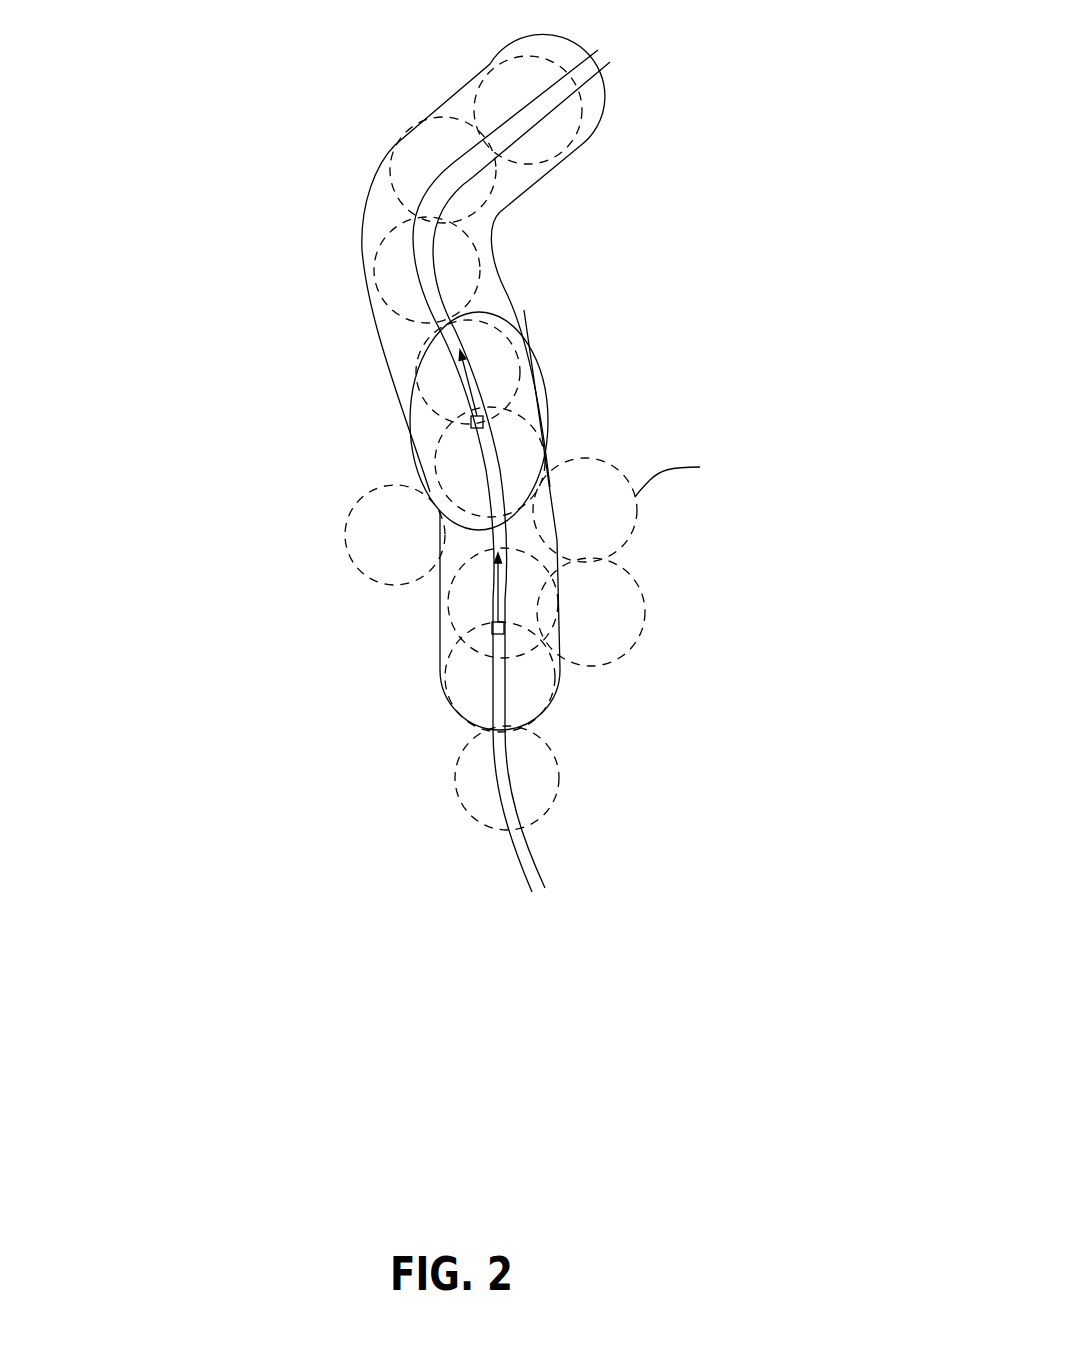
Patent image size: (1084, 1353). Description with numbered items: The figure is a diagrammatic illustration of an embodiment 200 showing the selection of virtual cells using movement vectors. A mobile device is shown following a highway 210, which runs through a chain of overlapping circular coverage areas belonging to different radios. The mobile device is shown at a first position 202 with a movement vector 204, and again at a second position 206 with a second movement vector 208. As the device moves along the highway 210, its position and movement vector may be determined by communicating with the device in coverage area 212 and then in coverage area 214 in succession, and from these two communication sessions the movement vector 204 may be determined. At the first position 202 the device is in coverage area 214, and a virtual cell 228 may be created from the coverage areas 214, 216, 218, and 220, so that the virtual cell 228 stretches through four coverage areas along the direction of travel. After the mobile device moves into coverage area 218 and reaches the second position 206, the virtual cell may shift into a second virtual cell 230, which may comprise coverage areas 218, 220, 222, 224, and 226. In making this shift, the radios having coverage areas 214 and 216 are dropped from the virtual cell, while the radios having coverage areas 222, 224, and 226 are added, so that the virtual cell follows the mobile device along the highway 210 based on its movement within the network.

The embodiment 200 is at (665, 956).
The first position 202 is at (507, 632).
The movement vector 204 is at (505, 588).
The second position 206 is at (470, 426).
The second movement vector 208 is at (458, 387).
The highway 210 is at (521, 853).
The coverage area 212 is at (455, 777).
The coverage area 214 is at (445, 677).
The coverage area 216 is at (453, 607).
The coverage area 218 is at (515, 427).
The coverage area 220 is at (525, 345).
The coverage area 222 is at (385, 252).
The coverage area 224 is at (390, 175).
The coverage area 226 is at (481, 88).
The virtual cell 228 is at (552, 503).
The virtual cell 230 is at (583, 150).